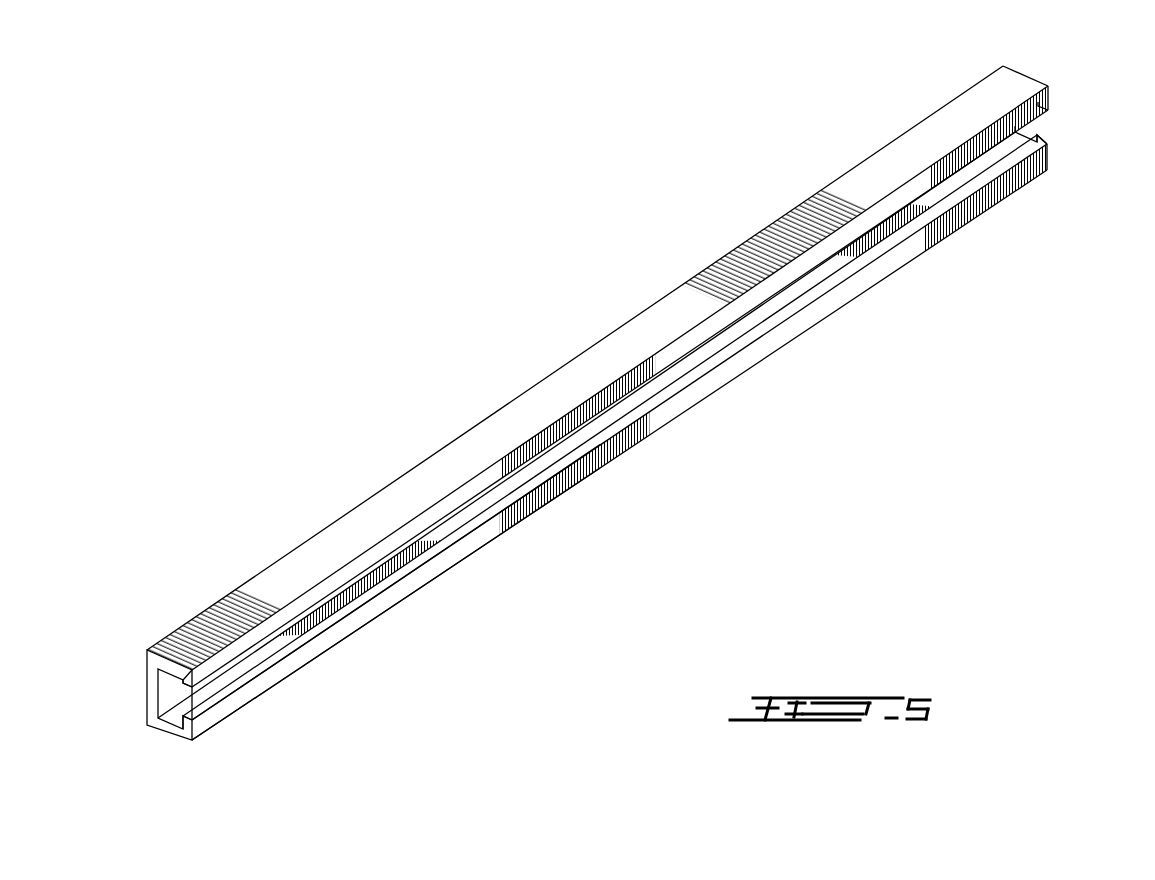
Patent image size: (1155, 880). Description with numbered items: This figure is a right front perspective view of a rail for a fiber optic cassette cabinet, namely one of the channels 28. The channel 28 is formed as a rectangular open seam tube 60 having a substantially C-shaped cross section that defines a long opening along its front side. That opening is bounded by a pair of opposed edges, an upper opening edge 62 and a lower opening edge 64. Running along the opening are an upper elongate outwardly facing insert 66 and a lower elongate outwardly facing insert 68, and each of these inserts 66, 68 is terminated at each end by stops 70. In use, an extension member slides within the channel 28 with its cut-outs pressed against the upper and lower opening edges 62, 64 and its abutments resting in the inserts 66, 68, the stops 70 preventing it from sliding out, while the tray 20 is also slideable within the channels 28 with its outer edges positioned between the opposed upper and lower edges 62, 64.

The channel 28 is at (312, 396).
The tray 20 is at (181, 683).
The rectangular open seam tube 60 is at (168, 685).
The upper opening edge 62 is at (272, 628).
The lower opening edge 64 is at (275, 680).
The upper elongate outwardly facing insert 66 is at (462, 495).
The lower elongate outwardly facing insert 68 is at (474, 530).
The stop 70 is at (1047, 148).